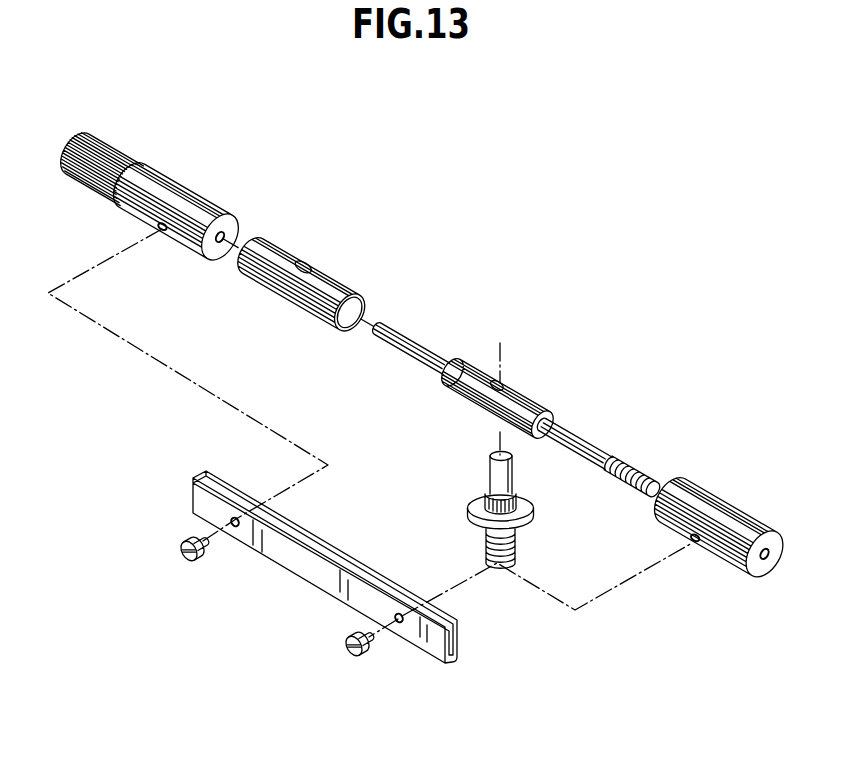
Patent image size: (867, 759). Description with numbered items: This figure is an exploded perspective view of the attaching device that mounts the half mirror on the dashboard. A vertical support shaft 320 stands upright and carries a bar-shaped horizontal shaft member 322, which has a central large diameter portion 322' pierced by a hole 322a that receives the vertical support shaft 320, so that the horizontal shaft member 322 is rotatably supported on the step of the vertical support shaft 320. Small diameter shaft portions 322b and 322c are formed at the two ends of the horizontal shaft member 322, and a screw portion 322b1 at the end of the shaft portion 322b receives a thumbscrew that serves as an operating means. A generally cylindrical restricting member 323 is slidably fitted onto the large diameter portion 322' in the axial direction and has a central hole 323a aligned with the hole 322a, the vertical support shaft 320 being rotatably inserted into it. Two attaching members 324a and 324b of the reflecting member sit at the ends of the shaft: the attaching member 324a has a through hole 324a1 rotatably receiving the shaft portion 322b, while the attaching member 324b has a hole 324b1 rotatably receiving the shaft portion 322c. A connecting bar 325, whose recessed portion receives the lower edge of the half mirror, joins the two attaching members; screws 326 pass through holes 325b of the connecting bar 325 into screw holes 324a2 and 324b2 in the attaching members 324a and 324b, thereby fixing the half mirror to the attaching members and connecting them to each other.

The vertical support shaft 320 is at (488, 474).
The horizontal shaft member 322 is at (524, 369).
The central large diameter portion 322' is at (527, 342).
The hole 322a is at (452, 392).
The small diameter shaft portion 322b is at (564, 430).
The screw portion 322b1 is at (631, 462).
The small diameter shaft portion 322c is at (428, 353).
The restricting member 323 is at (338, 289).
The central hole 323a is at (309, 263).
The attaching member 324a is at (699, 494).
The through hole 324a1 is at (766, 562).
The screw hole 324a2 is at (693, 548).
The attaching member 324b is at (177, 196).
The hole 324b1 is at (224, 238).
The screw hole 324b2 is at (163, 224).
The connecting bar 325 is at (293, 560).
The holes 325b is at (232, 522).
The screws 326 is at (363, 656).